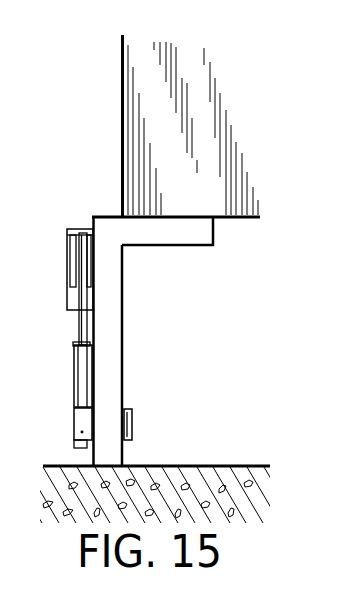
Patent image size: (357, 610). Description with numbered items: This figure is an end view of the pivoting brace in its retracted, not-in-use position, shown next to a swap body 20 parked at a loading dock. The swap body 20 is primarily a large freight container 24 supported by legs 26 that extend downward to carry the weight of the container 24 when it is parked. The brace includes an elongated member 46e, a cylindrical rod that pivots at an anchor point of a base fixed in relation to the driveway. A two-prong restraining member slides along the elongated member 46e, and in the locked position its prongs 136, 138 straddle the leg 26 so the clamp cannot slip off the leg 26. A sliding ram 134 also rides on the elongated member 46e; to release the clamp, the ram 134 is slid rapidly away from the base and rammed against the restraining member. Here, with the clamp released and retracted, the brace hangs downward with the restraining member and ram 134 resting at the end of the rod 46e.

The swap body 20 is at (109, 153).
The freight container 24 is at (175, 246).
The leg 26 is at (122, 313).
The elongated member 46e is at (72, 325).
The sliding ram 134 is at (92, 376).
The prong 136 is at (74, 420).
The prong 138 is at (135, 424).